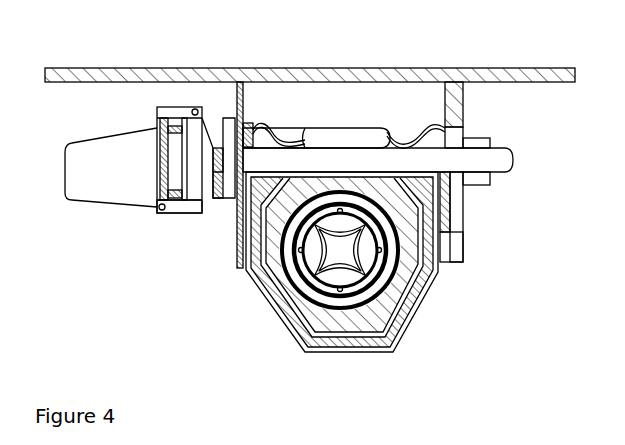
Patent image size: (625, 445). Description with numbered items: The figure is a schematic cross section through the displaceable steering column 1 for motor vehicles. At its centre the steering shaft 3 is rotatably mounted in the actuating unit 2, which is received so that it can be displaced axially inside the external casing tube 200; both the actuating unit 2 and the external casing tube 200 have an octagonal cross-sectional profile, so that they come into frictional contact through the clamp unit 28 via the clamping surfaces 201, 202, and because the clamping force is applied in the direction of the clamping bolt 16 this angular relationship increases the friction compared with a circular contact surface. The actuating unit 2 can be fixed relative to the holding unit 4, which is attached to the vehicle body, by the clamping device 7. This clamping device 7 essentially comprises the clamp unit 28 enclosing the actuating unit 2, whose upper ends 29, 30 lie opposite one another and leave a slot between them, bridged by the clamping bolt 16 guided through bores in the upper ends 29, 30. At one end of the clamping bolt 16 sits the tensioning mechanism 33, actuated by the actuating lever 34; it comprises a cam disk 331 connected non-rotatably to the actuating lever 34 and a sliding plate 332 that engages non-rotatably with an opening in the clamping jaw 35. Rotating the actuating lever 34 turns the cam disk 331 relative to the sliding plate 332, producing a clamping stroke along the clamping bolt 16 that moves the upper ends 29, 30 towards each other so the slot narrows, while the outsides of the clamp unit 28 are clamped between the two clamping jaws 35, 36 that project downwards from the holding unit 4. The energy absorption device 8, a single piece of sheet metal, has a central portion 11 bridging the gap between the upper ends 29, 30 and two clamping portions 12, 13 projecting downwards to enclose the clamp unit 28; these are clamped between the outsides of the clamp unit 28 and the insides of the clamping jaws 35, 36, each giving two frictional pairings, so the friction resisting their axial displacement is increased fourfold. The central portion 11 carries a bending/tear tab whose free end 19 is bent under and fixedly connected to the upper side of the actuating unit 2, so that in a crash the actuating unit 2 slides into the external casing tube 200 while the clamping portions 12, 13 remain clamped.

The steering column 1 is at (449, 353).
The actuating unit 2 is at (307, 348).
The steering shaft 3 is at (430, 307).
The holding unit 4 is at (493, 76).
The clamping device 7 is at (172, 224).
The energy absorption device 8 is at (320, 112).
The central portion 11 is at (293, 133).
The clamping portion 12 is at (265, 123).
The clamping portion 13 is at (417, 122).
The clamping bolt 16 is at (497, 163).
The free end 19 is at (348, 140).
The clamp unit 28 is at (343, 343).
The upper end 29 is at (233, 209).
The upper end 30 is at (458, 225).
The tensioning mechanism 33 is at (153, 224).
The actuating lever 34 is at (88, 187).
The clamping jaw 35 is at (233, 262).
The clamping jaw 36 is at (460, 248).
The external casing tube 200 is at (440, 272).
The clamping surface 201 is at (262, 310).
The clamping surface 202 is at (272, 327).
The cam disk 331 is at (200, 153).
The sliding plate 332 is at (230, 147).